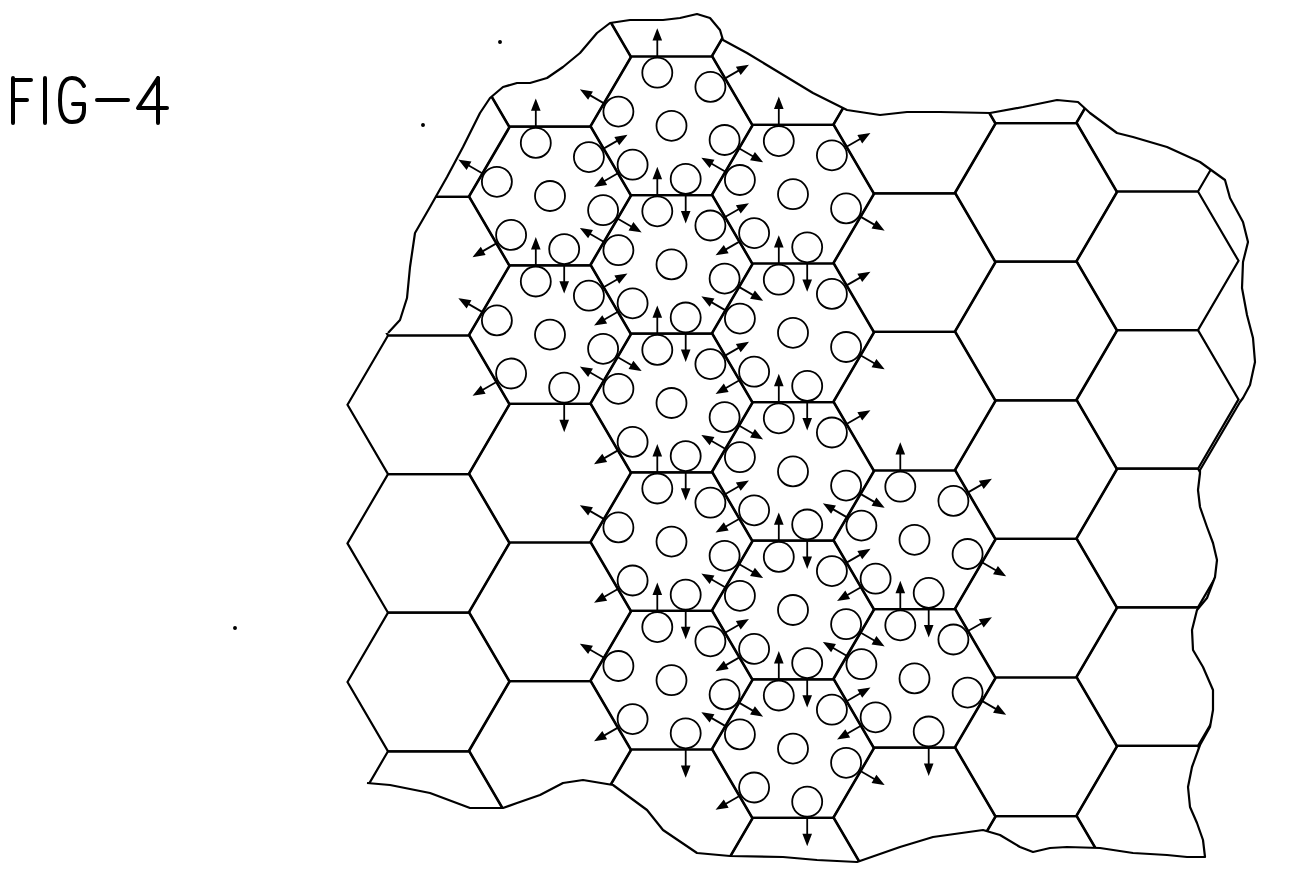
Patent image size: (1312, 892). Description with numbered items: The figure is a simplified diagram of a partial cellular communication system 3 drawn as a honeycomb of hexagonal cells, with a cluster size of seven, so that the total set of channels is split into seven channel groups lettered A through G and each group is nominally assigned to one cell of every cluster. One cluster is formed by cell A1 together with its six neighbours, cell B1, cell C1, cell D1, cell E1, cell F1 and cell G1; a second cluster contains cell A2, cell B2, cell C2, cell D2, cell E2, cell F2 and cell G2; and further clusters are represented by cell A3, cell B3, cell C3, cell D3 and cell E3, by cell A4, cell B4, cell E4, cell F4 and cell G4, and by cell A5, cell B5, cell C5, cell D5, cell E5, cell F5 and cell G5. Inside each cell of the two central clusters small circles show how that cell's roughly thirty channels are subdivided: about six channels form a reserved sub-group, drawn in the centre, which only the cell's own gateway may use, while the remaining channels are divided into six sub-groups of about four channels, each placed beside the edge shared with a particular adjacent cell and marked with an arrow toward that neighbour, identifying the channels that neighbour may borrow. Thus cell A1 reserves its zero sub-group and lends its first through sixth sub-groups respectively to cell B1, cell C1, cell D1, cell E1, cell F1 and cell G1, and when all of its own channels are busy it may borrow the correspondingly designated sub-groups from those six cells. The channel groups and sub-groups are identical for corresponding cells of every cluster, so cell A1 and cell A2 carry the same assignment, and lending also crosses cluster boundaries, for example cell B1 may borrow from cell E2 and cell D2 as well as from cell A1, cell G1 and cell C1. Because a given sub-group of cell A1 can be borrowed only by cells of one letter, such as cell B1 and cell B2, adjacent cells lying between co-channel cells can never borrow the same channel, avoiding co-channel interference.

The cell boundary 3 is at (793, 438).
The cell B2 is at (671, 126).
The cell G2 is at (550, 196).
The cell C2 is at (793, 194).
The cell A2 is at (671, 264).
The cell F2 is at (550, 335).
The cell D2 is at (793, 333).
The cell E2 is at (671, 403).
The cell B1 is at (793, 471).
The cell G1 is at (671, 541).
The cell C1 is at (914, 540).
The cell A1 is at (793, 610).
The cell F1 is at (671, 680).
The cell D1 is at (914, 678).
The cell E1 is at (793, 749).
The cell B3 is at (429, 405).
The cell A3 is at (429, 543).
The cell E3 is at (429, 682).
The cell C3 is at (550, 473).
The cell D3 is at (550, 612).
The cell G5 is at (915, 262).
The cell F5 is at (915, 401).
The cell B5 is at (1036, 192).
The cell A5 is at (1036, 331).
The cell E5 is at (1036, 469).
The cell G4 is at (1036, 608).
The cell F4 is at (1036, 747).
The cell C5 is at (1158, 260).
The cell D5 is at (1158, 399).
The cell B4 is at (1158, 538).
The cell A4 is at (1158, 676).
The cell E4 is at (1158, 815).